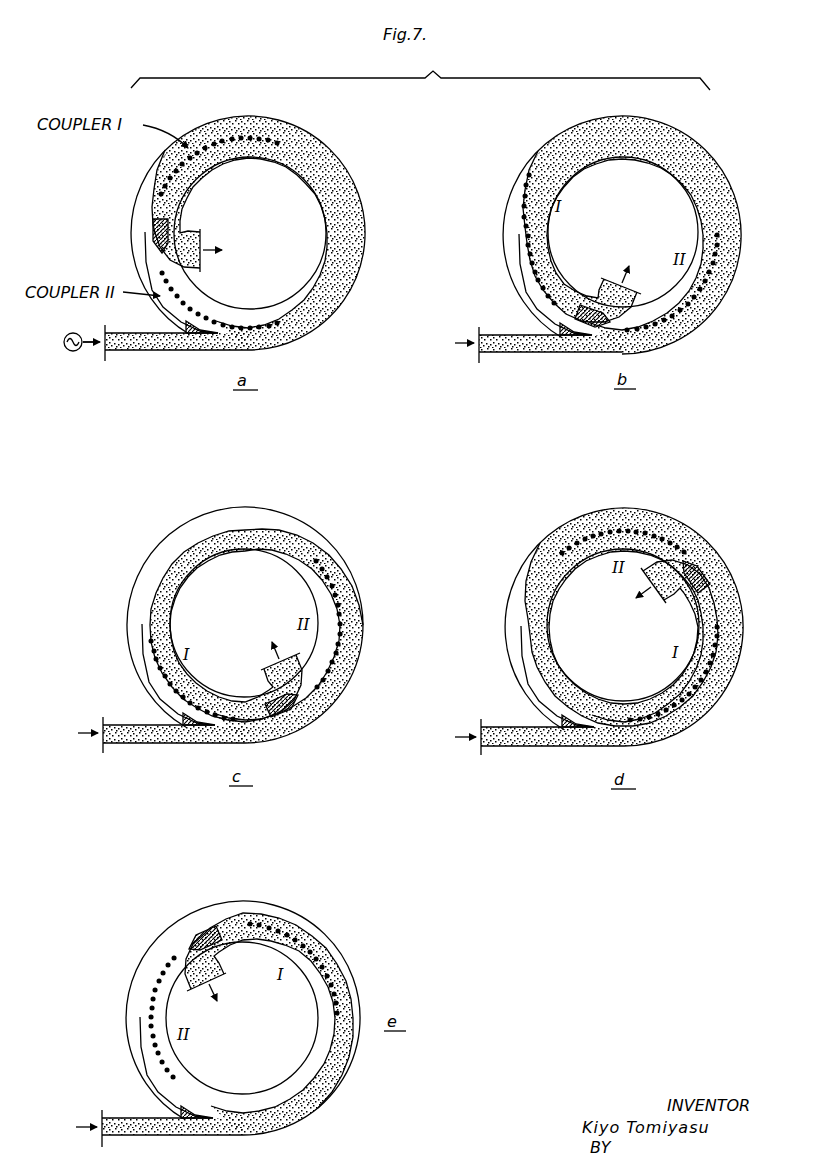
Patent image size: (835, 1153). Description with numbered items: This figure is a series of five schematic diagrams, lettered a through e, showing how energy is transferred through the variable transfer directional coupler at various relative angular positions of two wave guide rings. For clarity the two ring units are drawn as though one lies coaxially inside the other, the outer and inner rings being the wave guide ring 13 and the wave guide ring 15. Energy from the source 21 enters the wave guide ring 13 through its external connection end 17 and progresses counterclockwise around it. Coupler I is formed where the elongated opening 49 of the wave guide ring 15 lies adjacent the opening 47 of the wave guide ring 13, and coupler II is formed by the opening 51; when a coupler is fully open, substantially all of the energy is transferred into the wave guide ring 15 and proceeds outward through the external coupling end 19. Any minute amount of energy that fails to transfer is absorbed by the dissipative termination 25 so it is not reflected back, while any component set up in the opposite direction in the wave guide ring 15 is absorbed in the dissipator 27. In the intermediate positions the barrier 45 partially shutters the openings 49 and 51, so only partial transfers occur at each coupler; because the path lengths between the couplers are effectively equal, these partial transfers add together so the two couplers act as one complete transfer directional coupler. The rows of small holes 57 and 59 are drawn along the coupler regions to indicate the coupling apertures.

The wave guide ring 13 is at (335, 146).
The wave guide ring 15 is at (320, 205).
The external connection end 17 is at (106, 333).
The external coupling end 19 is at (203, 248).
The source 21 is at (71, 352).
The dissipative termination 25 is at (186, 326).
The dissipator 27 is at (150, 255).
The barrier 45 is at (147, 275).
The opening 47 is at (138, 210).
The elongated opening 49 is at (270, 137).
The opening 51 is at (228, 322).
The coupling holes 57 is at (213, 143).
The coupling holes 59 is at (266, 322).